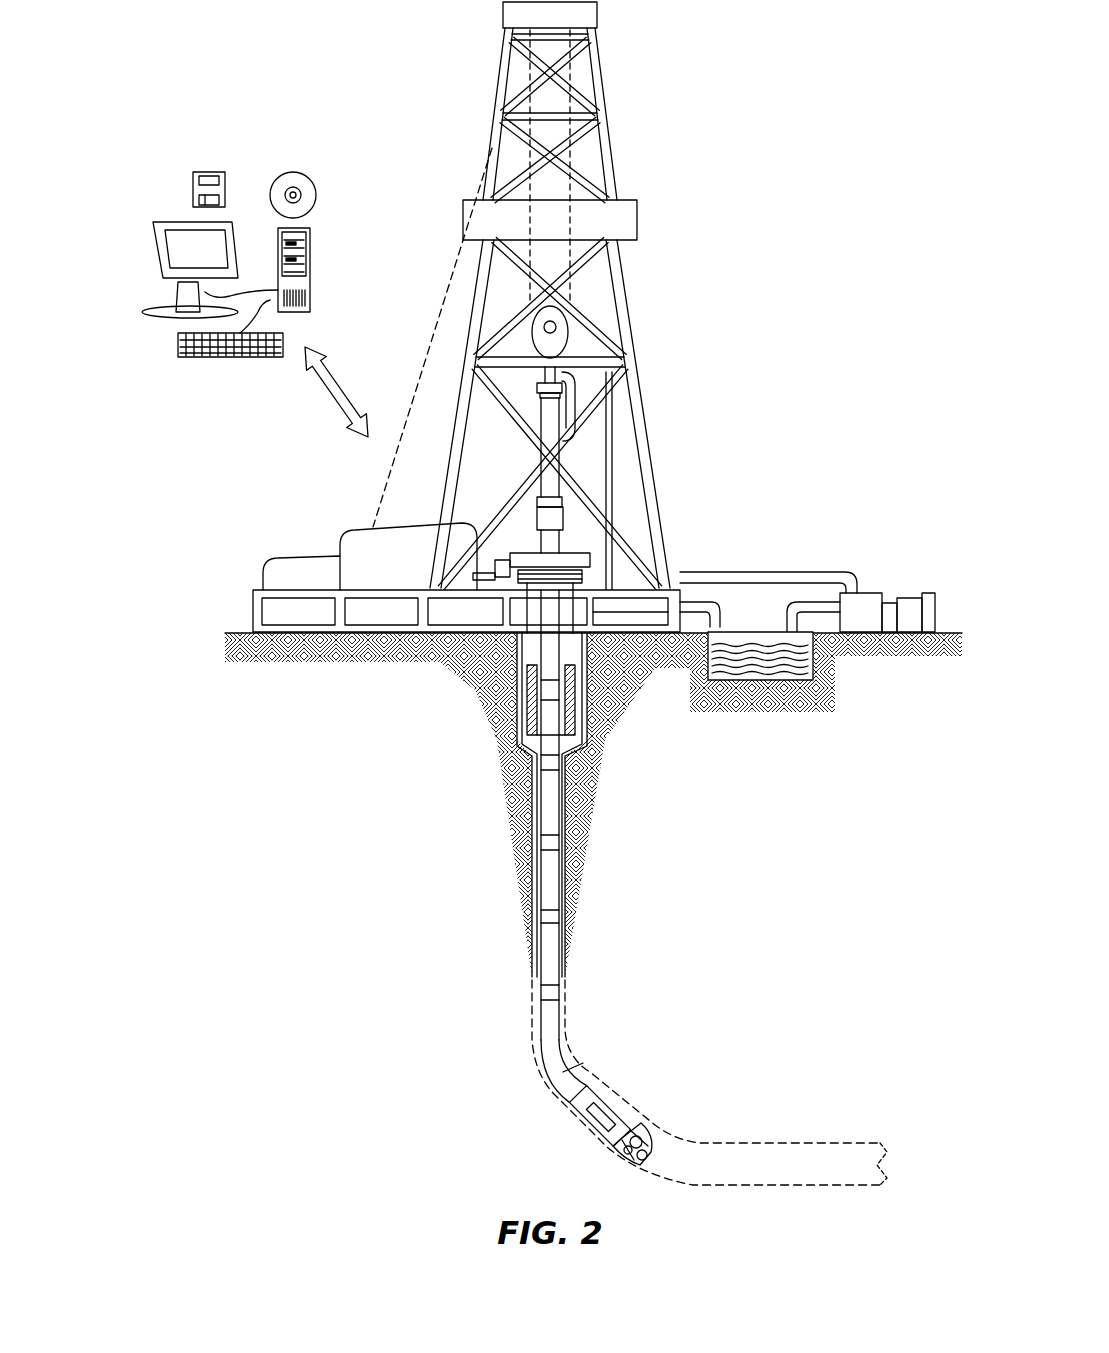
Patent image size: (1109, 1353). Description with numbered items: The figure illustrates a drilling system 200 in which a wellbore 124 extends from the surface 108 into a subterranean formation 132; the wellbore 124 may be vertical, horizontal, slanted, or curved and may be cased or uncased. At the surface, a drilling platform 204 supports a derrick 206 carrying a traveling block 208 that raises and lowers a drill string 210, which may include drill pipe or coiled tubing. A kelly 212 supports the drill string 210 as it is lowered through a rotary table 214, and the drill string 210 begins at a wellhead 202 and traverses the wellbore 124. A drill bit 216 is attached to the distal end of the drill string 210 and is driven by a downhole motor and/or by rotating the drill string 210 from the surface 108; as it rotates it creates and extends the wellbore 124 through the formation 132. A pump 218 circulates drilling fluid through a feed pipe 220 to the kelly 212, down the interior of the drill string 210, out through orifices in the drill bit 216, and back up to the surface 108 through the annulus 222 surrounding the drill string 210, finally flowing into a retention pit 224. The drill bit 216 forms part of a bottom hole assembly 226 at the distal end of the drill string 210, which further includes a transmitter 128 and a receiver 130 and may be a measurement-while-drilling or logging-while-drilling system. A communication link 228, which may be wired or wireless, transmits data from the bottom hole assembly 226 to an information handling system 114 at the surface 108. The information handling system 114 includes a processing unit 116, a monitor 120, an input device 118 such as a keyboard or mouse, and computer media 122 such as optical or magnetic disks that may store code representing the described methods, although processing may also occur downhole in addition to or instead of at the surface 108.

The drilling system 200 is at (869, 98).
The information handling system 114 is at (160, 163).
The computer media 122 is at (291, 172).
The monitor 120 is at (155, 258).
The processing unit 116 is at (312, 240).
The input device 118 is at (185, 360).
The communication link 228 is at (325, 398).
The derrick 206 is at (617, 143).
The traveling block 208 is at (568, 330).
The kelly 212 is at (552, 414).
The rotary table 214 is at (600, 555).
The wellhead 202 is at (593, 578).
The drilling platform 204 is at (253, 612).
The feed pipe 220 is at (790, 572).
The pump 218 is at (870, 593).
The surface 108 is at (945, 632).
The retention pit 224 is at (755, 667).
The annulus 222 is at (537, 835).
The wellbore 124 is at (570, 835).
The bottom hole assembly 226 is at (561, 1094).
The drill string 210 is at (557, 818).
The transmitter 128 is at (588, 1085).
The receiver 130 is at (600, 1112).
The drill bit 216 is at (646, 1132).
The subterranean formation 132 is at (755, 928).